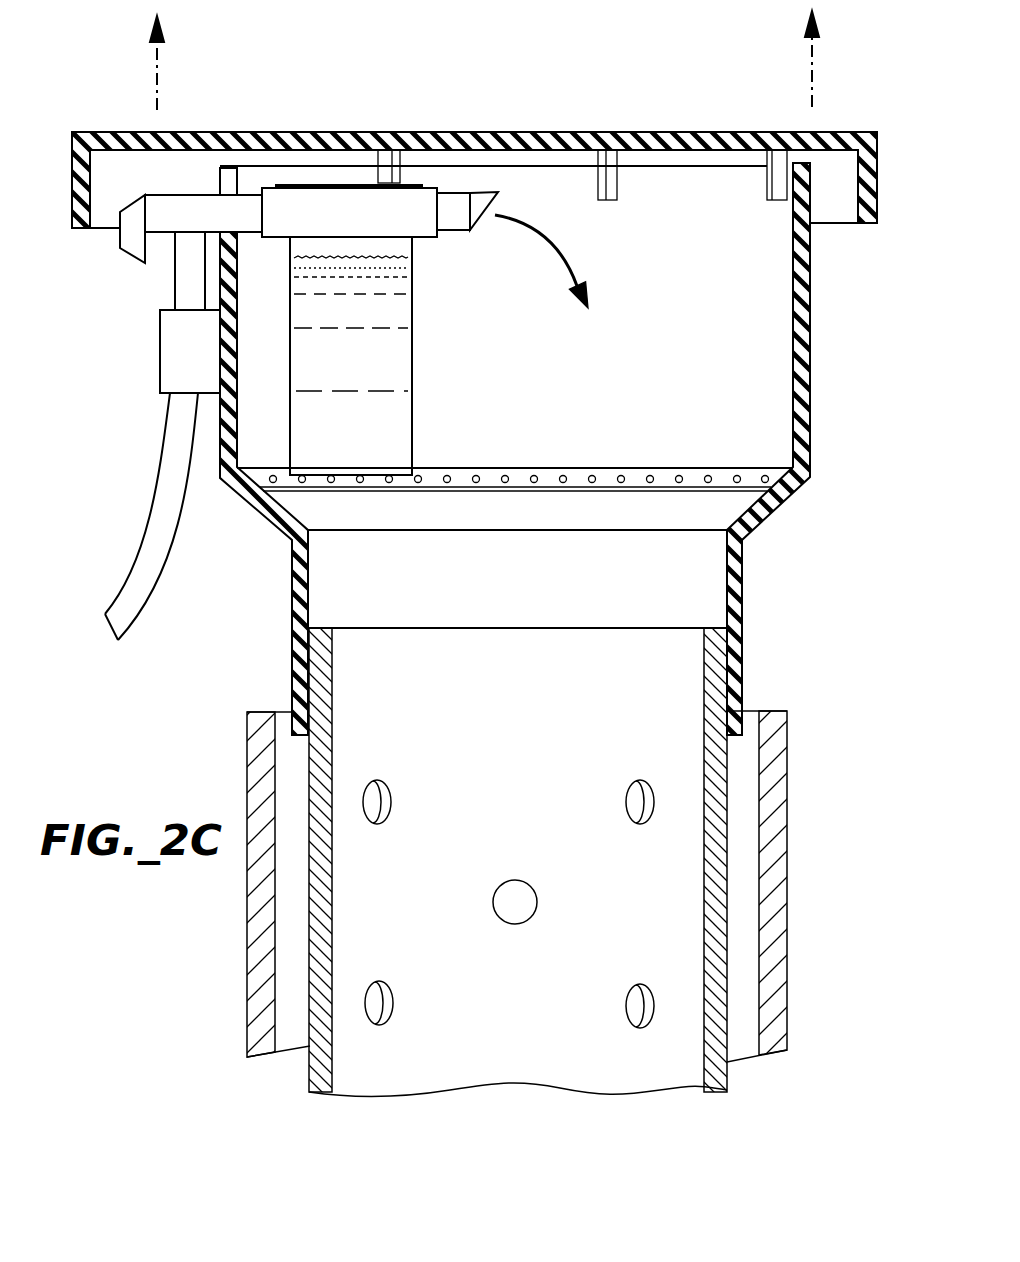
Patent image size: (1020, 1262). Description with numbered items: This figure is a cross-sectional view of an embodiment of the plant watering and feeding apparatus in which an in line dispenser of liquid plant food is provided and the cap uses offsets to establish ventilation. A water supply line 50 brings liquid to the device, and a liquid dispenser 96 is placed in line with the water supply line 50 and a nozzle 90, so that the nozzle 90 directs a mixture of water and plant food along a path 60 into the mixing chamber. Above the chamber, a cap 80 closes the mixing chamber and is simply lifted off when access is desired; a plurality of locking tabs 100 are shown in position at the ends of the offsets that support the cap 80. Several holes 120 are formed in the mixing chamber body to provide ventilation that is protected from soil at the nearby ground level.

The water supply line 50 is at (158, 472).
The path 60 is at (567, 258).
The cap 80 is at (837, 131).
The nozzle 90 is at (455, 233).
The liquid dispenser 96 is at (412, 408).
The locking tabs 100 is at (620, 178).
The holes 120 is at (798, 190).